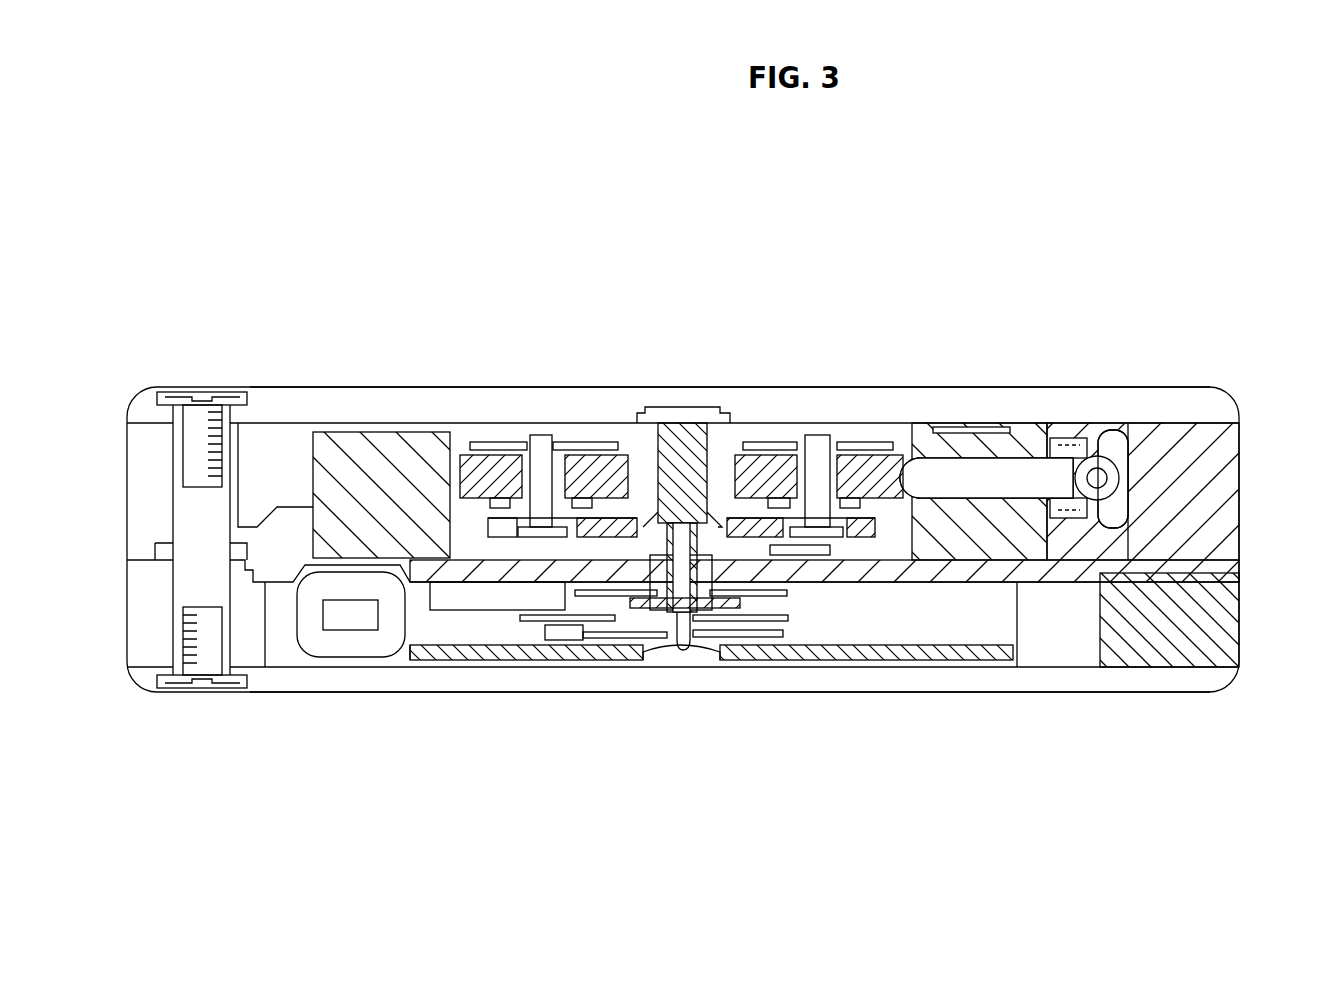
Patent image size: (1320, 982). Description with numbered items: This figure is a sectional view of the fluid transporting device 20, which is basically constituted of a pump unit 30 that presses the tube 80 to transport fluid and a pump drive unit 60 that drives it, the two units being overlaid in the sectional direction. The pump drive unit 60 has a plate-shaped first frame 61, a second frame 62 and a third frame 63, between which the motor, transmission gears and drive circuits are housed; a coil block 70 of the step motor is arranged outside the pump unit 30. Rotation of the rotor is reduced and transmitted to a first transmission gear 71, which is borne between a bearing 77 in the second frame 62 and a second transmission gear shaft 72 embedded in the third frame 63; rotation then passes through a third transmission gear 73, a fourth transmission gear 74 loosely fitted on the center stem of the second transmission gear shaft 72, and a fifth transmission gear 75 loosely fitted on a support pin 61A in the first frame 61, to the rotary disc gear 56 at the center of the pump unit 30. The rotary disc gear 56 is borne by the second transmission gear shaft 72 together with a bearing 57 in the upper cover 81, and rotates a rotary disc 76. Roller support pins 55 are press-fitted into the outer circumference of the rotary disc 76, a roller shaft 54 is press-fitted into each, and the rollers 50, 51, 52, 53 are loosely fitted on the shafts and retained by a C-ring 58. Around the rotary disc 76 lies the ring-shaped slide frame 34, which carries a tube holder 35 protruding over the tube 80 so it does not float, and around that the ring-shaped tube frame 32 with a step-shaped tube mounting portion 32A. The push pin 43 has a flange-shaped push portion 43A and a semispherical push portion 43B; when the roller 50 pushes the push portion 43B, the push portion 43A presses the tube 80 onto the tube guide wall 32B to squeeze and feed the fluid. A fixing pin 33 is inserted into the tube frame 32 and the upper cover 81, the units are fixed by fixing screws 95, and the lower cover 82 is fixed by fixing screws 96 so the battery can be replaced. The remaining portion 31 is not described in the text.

The fluid transporting device 20 is at (988, 280).
The pump unit 30 is at (638, 452).
The lower housing 31 is at (127, 623).
The tube frame 32 is at (127, 468).
The tube mounting portion 32A is at (1070, 545).
The tube guide wall 32B is at (1180, 455).
The fixing pin 33 is at (185, 537).
The slide frame 34 is at (368, 430).
The tube holder 35 is at (1068, 440).
The push pin 43 is at (1040, 470).
The push portion 43A is at (1090, 495).
The push portion 43B is at (920, 470).
The roller 50 is at (866, 470).
The roller 51 is at (488, 450).
The roller 52 is at (590, 475).
The roller 53 is at (562, 486).
The roller shaft 54 is at (800, 455).
The roller support pin 55 is at (830, 455).
The rotary disc gear 56 is at (632, 575).
The bearing 57 is at (720, 445).
The C-ring 58 is at (752, 452).
The pump drive unit 60 is at (922, 620).
The first frame 61 is at (1012, 590).
The support pin 61A is at (785, 560).
The second frame 62 is at (440, 660).
The third frame 63 is at (745, 642).
The coil block 70 is at (375, 652).
The first transmission gear 71 is at (610, 625).
The second transmission gear shaft 72 is at (655, 612).
The third transmission gear 73 is at (578, 630).
The fourth transmission gear 74 is at (775, 622).
The fifth transmission gear 75 is at (822, 560).
The rotary disc 76 is at (506, 537).
The bearing 77 is at (715, 660).
The tube 80 is at (1112, 500).
The upper cover 81 is at (313, 387).
The lower cover 82 is at (322, 692).
The fixing screws 95 is at (232, 392).
The fixing screws 96 is at (232, 692).